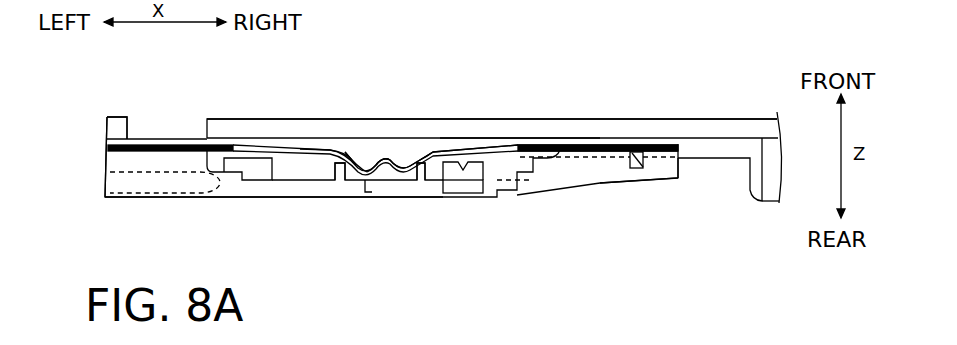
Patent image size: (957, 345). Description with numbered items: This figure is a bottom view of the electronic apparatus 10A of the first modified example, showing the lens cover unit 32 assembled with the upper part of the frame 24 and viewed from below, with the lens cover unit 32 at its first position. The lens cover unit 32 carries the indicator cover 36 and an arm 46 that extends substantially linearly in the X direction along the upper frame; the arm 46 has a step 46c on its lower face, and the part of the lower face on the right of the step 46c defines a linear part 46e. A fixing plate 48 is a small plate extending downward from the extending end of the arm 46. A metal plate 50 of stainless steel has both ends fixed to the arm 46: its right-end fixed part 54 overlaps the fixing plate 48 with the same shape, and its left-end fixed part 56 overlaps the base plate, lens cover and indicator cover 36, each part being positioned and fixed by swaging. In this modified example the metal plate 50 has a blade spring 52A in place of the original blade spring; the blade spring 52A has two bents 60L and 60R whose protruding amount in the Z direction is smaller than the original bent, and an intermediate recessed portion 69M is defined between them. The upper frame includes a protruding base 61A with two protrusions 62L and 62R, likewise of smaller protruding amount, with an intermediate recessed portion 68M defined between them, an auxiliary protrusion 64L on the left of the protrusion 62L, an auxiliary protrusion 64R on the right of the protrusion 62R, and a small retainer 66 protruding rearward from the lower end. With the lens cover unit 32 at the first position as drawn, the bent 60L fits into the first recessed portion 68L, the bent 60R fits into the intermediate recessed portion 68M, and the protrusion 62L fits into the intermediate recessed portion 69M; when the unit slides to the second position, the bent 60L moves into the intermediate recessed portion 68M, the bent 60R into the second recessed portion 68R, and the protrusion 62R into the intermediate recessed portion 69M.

The electronic apparatus 10A is at (738, 36).
The frame 24 is at (590, 125).
The left-end fixed part 56 is at (148, 138).
The indicator cover 36 is at (186, 160).
The lens cover unit 32 is at (140, 163).
The arm 46 is at (297, 200).
The step 46c is at (372, 192).
The linear part 46e is at (383, 200).
The blade spring 52A is at (278, 142).
The auxiliary protrusion 64L is at (340, 150).
The bent 60L is at (352, 153).
The intermediate recessed portion 69M is at (385, 156).
The protrusion 62L is at (397, 158).
The bent 60R is at (411, 157).
The protrusion 62R is at (432, 152).
The auxiliary protrusion 64R is at (486, 150).
The metal plate 50 is at (515, 137).
The right-end fixed part 54 is at (658, 142).
The fixing plate 48 is at (658, 180).
The protruding base 61A is at (483, 197).
The retainer 66 is at (467, 193).
The first recessed portion 68L is at (345, 196).
The intermediate recessed portion 68M is at (415, 192).
The second recessed portion 68R is at (447, 196).